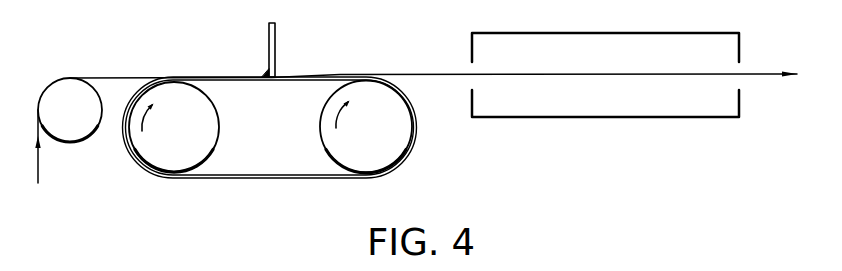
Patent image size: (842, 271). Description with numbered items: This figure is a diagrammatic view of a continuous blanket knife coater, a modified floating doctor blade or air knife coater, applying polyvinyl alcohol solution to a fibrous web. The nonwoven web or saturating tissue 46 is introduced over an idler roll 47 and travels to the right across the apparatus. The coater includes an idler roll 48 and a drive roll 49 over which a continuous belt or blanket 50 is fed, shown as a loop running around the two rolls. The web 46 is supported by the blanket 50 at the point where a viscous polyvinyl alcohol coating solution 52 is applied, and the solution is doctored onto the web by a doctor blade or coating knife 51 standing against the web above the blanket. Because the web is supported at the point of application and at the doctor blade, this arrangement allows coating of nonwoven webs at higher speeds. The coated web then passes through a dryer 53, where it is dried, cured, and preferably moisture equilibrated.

The nonwoven web 46 is at (38, 183).
The idler roll 47 is at (73, 142).
The idler roll 48 is at (213, 123).
The drive roll 49 is at (331, 140).
The continuous belt or blanket 50 is at (303, 177).
The doctor blade 51 is at (268, 32).
The polyvinyl alcohol coating solution 52 is at (263, 72).
The dryer 53 is at (619, 118).